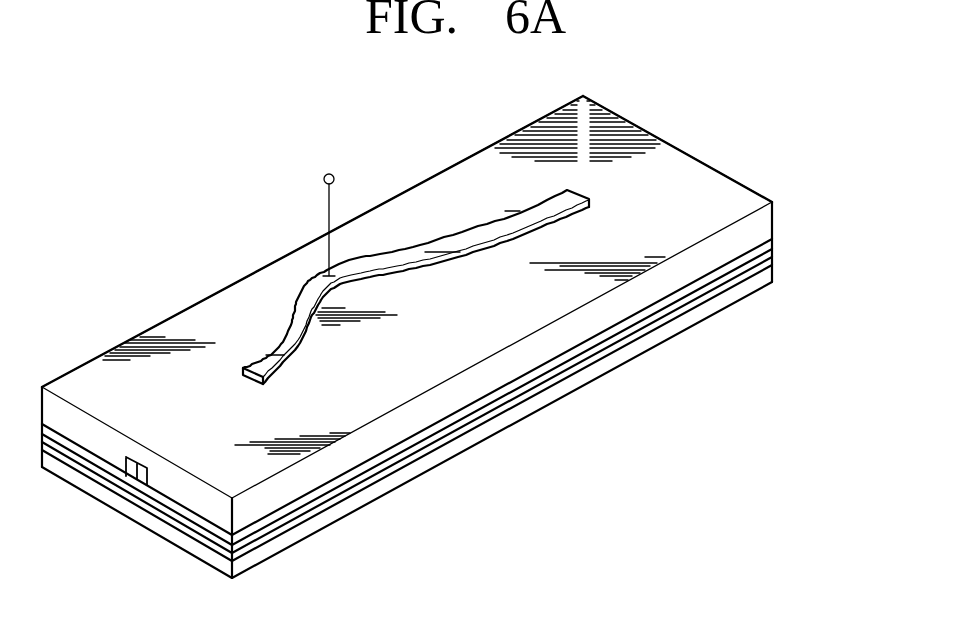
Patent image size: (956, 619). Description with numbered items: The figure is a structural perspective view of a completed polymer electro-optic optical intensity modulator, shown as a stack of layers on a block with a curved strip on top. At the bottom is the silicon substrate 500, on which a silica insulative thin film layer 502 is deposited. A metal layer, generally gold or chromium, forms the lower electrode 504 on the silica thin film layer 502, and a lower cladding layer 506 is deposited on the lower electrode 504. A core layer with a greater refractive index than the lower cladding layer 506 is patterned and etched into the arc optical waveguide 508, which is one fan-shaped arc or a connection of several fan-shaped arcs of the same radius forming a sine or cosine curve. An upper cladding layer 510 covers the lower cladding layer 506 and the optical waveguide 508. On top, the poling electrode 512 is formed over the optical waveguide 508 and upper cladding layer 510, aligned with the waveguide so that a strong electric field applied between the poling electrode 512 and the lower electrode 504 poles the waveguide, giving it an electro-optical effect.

The silicon substrate 500 is at (773, 278).
The silica insulative thin film layer 502 is at (773, 263).
The lower electrode 504 is at (773, 252).
The lower cladding layer 506 is at (773, 242).
The arc optical waveguide 508 is at (133, 472).
The upper cladding layer 510 is at (773, 213).
The poling electrode 512 is at (315, 277).